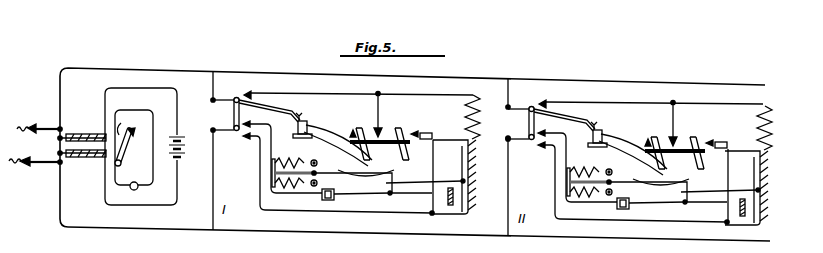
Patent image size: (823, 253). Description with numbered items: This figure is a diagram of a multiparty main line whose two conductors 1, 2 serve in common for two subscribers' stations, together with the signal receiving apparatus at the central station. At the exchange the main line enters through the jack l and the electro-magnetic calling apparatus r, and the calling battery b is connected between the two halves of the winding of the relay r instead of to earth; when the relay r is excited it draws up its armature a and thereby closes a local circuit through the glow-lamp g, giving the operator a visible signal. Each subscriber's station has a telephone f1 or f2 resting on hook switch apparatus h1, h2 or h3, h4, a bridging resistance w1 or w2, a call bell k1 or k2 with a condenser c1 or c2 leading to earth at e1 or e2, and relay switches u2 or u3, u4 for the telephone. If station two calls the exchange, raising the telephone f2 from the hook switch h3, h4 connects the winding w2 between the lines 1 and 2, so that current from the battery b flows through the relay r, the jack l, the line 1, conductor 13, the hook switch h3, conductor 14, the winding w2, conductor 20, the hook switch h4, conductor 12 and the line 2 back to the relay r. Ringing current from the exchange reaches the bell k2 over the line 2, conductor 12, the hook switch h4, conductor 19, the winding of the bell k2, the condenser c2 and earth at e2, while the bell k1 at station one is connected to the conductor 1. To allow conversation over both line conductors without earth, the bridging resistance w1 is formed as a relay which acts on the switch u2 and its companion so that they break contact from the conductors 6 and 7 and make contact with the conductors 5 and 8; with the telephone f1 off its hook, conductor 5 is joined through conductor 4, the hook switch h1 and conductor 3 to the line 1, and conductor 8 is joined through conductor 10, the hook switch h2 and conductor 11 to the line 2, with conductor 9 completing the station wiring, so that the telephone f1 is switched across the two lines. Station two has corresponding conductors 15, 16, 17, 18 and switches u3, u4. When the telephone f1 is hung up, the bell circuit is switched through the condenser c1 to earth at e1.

The line conductor 1 is at (412, 86).
The line conductor 2 is at (416, 159).
The conductor 3 is at (213, 84).
The conductor 4 is at (462, 97).
The conductor 5 is at (376, 111).
The conductor 6 is at (348, 141).
The conductor 7 is at (388, 186).
The conductor 8 is at (428, 167).
The conductor 9 is at (337, 160).
The conductor 10 is at (355, 181).
The conductor 11 is at (213, 223).
The conductor 12 is at (500, 186).
The conductor 13 is at (500, 94).
The conductor 14 is at (651, 111).
The conductor 15 is at (662, 123).
The conductor 16 is at (664, 144).
The conductor 17 is at (707, 194).
The conductor 18 is at (715, 186).
The conductor 19 is at (632, 175).
The conductor 20 is at (633, 181).
The jack l is at (43, 126).
The electro-magnetic calling apparatus r is at (82, 148).
The armature a is at (134, 147).
The calling battery b is at (145, 151).
The glow-lamp g is at (136, 177).
The hook switch h1 is at (256, 103).
The hook switch h2 is at (223, 179).
The hook switch h3 is at (551, 112).
The hook switch h4 is at (518, 149).
The telephone f1 is at (312, 119).
The telephone f2 is at (607, 128).
The relay switch u2 is at (404, 110).
The relay switch u3 is at (644, 148).
The relay switch u4 is at (708, 135).
The call bell k1 is at (332, 175).
The call bell k2 is at (627, 184).
The condenser c1 is at (337, 200).
The condenser c2 is at (632, 209).
The earth connection e1 is at (452, 186).
The earth connection e2 is at (746, 188).
The bridging resistance w1 is at (484, 117).
The bridging resistance winding w2 is at (767, 105).